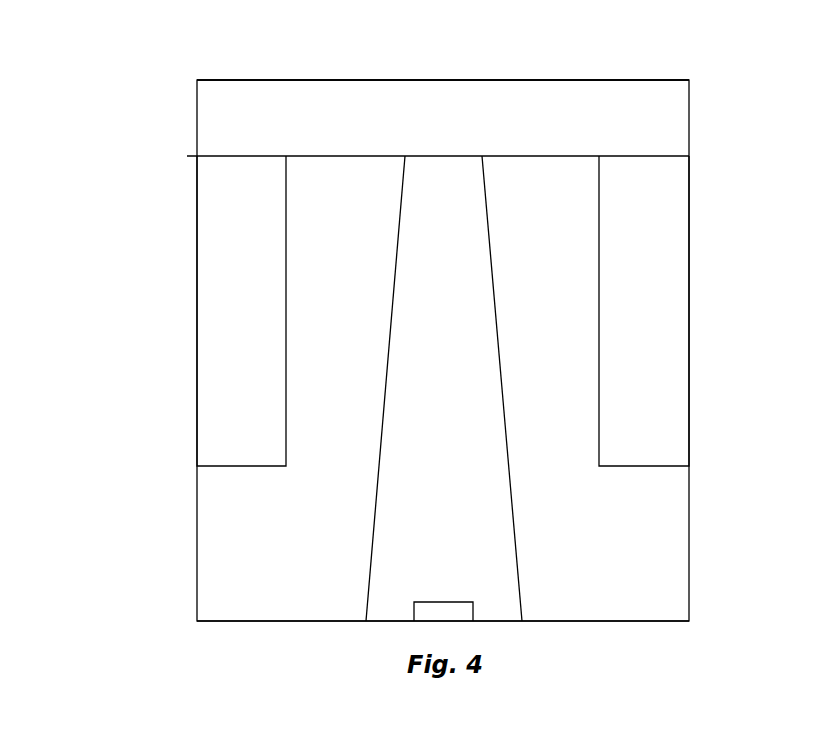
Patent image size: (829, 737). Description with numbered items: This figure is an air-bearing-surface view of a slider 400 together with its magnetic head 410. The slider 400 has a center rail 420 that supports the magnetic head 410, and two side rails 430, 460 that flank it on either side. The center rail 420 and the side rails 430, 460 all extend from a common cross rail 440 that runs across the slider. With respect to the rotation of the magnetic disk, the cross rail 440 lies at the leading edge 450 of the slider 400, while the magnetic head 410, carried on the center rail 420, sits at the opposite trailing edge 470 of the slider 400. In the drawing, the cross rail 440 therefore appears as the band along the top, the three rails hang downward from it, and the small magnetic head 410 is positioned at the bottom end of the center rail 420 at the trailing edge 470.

The slider 400 is at (66, 577).
The magnetic head 410 is at (432, 611).
The center rail 420 is at (415, 457).
The side rail 430 is at (237, 283).
The cross rail 440 is at (237, 109).
The leading edge 450 is at (265, 80).
The side rail 460 is at (668, 302).
The trailing edge 470 is at (600, 621).